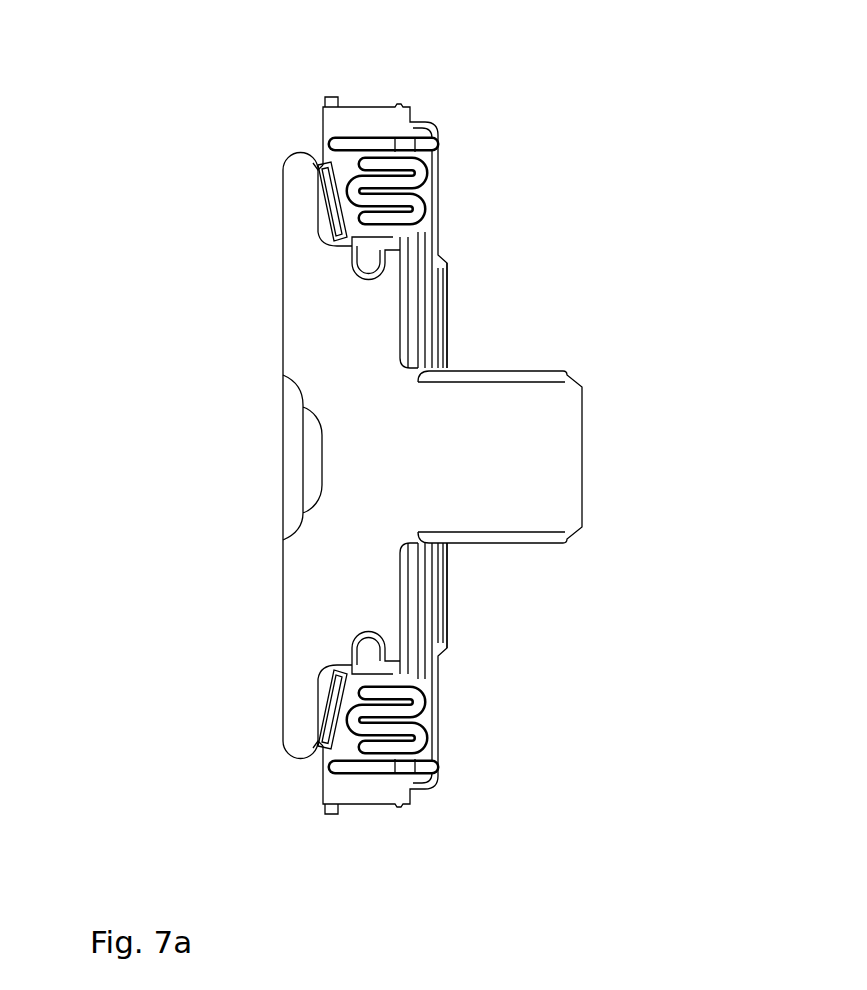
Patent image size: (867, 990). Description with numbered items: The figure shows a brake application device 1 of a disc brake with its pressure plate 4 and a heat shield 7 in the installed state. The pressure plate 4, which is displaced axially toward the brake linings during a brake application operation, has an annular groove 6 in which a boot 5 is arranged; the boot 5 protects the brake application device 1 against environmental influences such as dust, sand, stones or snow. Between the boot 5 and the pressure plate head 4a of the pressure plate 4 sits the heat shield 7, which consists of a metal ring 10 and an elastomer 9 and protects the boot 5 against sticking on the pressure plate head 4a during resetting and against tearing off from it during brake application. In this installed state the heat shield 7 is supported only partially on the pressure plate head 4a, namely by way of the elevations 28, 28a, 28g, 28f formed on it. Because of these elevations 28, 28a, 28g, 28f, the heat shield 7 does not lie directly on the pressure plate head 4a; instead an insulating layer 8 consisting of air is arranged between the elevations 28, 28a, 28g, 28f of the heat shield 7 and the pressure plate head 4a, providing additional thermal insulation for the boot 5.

The brake application device 1 is at (487, 577).
The pressure plate 4 is at (570, 380).
The pressure plate head 4a is at (282, 343).
The boot 5 is at (395, 249).
The annular groove 6 is at (356, 634).
The heat shield 7 is at (316, 159).
The insulating layer 8 is at (320, 720).
The elastomer 9 is at (323, 200).
The metal ring 10 is at (323, 753).
The elevation 28 is at (318, 177).
The elevation 28a is at (316, 230).
The elevation 28f is at (320, 732).
The elevation 28g is at (327, 682).